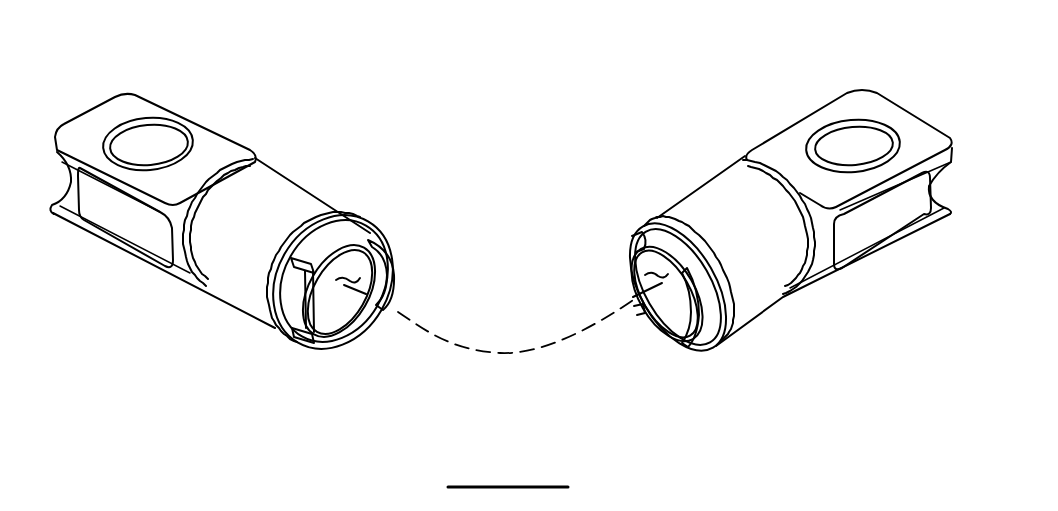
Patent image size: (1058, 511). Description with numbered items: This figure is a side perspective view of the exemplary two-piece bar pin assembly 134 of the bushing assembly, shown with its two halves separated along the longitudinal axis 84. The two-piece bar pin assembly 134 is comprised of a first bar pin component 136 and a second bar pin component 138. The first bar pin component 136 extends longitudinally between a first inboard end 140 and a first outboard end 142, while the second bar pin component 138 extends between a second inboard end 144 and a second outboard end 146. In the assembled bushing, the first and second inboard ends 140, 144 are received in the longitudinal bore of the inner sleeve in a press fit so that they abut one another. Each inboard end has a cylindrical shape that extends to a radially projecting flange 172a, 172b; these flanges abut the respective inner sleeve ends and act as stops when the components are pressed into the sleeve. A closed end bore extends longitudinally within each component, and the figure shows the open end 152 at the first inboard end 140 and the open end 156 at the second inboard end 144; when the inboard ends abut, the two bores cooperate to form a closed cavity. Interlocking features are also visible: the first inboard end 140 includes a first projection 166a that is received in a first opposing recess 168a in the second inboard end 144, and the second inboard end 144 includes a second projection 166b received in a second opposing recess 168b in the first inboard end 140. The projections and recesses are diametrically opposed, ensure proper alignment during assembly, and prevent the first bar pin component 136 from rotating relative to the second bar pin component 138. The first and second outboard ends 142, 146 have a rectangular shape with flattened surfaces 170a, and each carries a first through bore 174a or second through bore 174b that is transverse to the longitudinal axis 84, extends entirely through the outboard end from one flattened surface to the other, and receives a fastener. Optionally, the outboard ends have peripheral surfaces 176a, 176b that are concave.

The two-piece bar pin assembly 134 is at (478, 88).
The first bar pin component 136 is at (147, 320).
The second bar pin component 138 is at (858, 322).
The first inboard end 140 is at (344, 338).
The first outboard end 142 is at (98, 106).
The second inboard end 144 is at (660, 339).
The second outboard end 146 is at (908, 102).
The open end 152 is at (348, 277).
The open end 156 is at (653, 272).
The first projection 166a is at (393, 258).
The second projection 166b is at (695, 355).
The first opposing recess 168a is at (293, 306).
The second opposing recess 168b is at (638, 242).
The flattened surface 170a is at (143, 100).
The radially projecting flange 172a is at (184, 237).
The radially projecting flange 172b is at (822, 238).
The first through bore 174a is at (149, 145).
The second through bore 174b is at (857, 146).
The peripheral surface 176a is at (93, 207).
The peripheral surface 176b is at (910, 207).
The longitudinal axis 84 is at (497, 352).